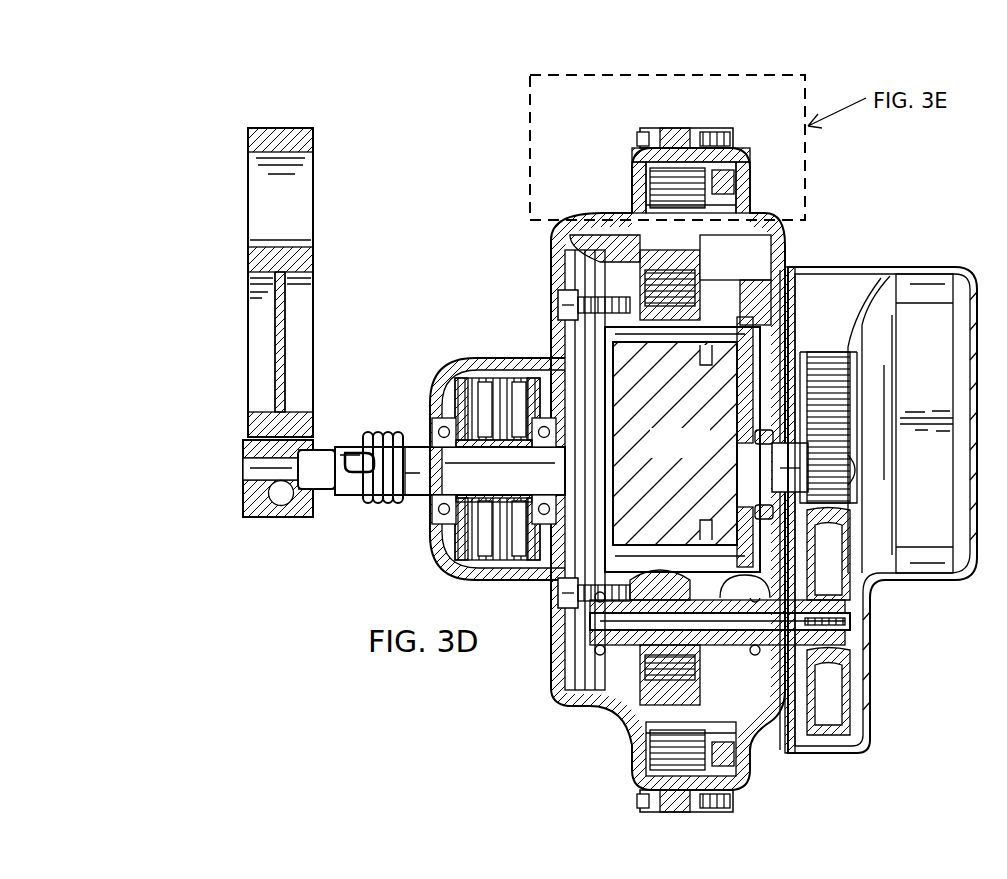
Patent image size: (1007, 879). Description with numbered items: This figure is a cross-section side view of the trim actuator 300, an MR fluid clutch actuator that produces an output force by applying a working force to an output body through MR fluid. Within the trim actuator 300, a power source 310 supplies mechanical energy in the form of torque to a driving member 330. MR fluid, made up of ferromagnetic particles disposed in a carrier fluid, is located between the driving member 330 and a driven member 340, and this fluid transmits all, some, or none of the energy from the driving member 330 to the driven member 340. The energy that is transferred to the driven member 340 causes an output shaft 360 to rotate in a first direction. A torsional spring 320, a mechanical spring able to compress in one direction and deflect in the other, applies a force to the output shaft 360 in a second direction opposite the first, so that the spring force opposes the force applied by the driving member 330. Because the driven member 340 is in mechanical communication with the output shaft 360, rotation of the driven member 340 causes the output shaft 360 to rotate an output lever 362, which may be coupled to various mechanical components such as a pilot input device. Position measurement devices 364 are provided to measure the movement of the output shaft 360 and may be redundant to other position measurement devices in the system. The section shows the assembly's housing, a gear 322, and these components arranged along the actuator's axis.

The trim actuator 300 is at (944, 178).
The power source 310 is at (715, 455).
The torsional spring 320 is at (385, 503).
The gear / cover 322 is at (828, 352).
The driving member 330 is at (630, 214).
The driven member 340 is at (697, 158).
The output shaft 360 is at (243, 470).
The output lever 362 is at (281, 127).
The position measurement devices 364 is at (510, 362).